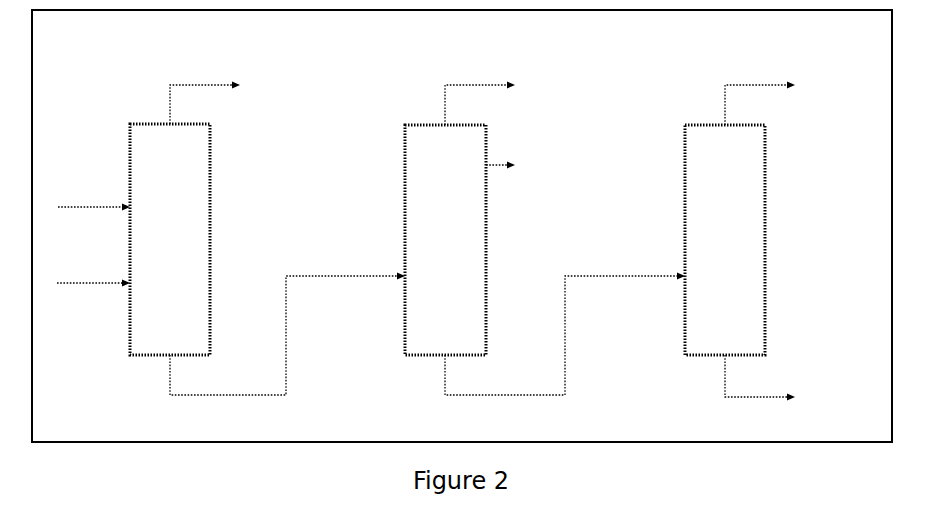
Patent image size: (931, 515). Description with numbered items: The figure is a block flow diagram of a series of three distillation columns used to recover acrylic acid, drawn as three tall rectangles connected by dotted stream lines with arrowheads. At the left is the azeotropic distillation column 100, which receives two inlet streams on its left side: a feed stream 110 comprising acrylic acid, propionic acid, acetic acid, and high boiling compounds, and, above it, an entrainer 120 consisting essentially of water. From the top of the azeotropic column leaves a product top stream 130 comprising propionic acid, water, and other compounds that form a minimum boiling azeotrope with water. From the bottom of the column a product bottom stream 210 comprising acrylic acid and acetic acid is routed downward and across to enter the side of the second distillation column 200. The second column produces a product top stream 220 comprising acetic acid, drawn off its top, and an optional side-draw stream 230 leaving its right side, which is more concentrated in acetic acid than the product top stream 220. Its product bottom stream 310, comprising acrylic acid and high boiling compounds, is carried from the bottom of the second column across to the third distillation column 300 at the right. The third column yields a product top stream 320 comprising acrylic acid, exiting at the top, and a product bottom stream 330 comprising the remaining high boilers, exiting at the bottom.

The azeotropic distillation column 100 is at (170, 239).
The feed stream 110 is at (79, 272).
The entrainer 120 is at (85, 195).
The product top stream 130 is at (206, 76).
The second distillation column 200 is at (445, 240).
The product bottom stream 210 is at (332, 270).
The product top stream 220 is at (478, 80).
The side-draw stream 230 is at (505, 160).
The third distillation column 300 is at (725, 240).
The product bottom stream 310 is at (607, 268).
The product top stream 320 is at (757, 77).
The product bottom stream 330 is at (765, 393).